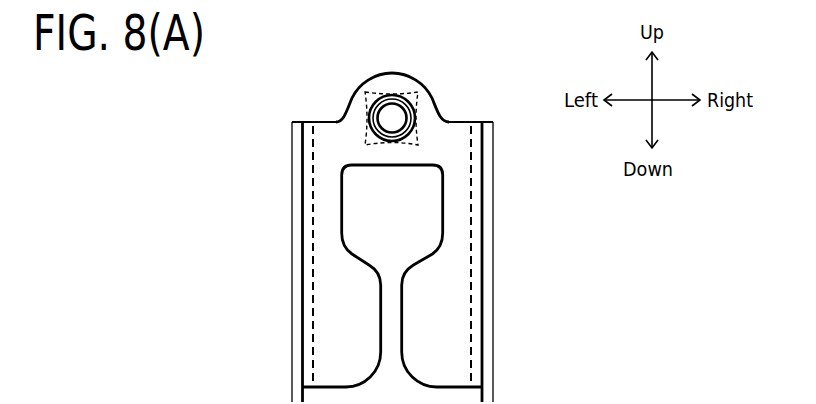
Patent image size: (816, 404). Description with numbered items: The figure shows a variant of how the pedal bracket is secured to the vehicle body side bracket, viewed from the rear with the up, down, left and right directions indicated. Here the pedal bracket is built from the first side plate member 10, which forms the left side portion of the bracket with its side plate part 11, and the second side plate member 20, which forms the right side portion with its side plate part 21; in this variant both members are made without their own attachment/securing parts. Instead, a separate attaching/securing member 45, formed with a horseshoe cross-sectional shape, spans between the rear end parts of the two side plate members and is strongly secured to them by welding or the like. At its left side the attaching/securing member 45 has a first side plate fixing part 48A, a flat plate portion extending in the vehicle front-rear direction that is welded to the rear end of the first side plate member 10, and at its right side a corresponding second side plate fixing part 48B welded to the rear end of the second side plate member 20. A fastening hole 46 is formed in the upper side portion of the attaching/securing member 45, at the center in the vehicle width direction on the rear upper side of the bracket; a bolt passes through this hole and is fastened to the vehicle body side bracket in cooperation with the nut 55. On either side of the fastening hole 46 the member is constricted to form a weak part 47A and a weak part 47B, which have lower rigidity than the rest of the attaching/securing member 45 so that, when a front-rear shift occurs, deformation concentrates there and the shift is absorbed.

The first side plate member 10 is at (278, 256).
The side plate part 11 is at (297, 357).
The second side plate member 20 is at (503, 243).
The side plate part 21 is at (488, 353).
The attaching/securing member 45 is at (327, 196).
The fastening hole 46 is at (392, 90).
The weak part 47A is at (342, 137).
The weak part 47B is at (438, 143).
The first side plate fixing part 48A is at (312, 298).
The second side plate fixing part 48B is at (475, 283).
The nut 55 is at (374, 103).